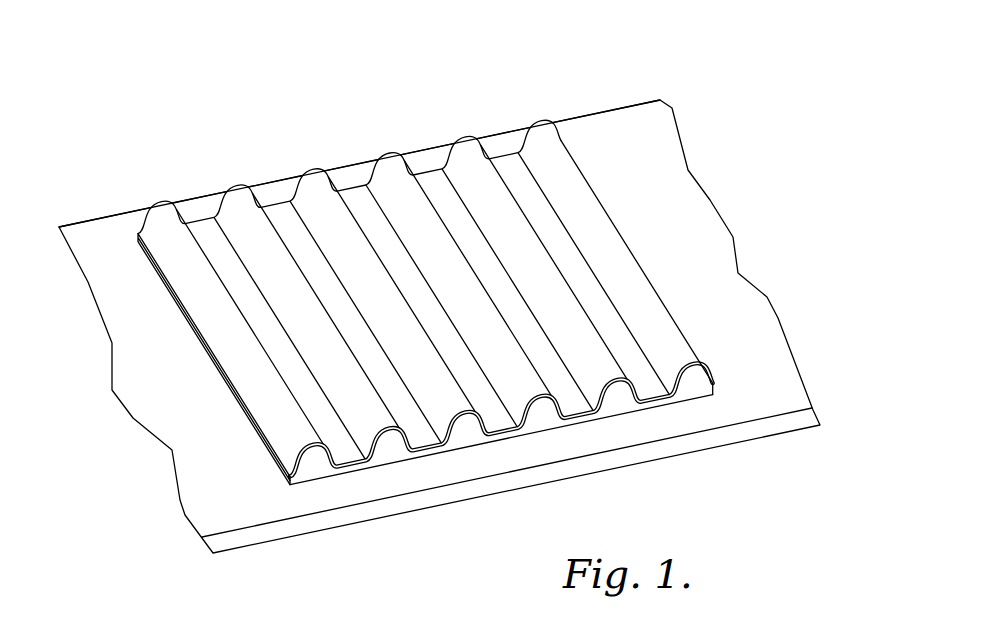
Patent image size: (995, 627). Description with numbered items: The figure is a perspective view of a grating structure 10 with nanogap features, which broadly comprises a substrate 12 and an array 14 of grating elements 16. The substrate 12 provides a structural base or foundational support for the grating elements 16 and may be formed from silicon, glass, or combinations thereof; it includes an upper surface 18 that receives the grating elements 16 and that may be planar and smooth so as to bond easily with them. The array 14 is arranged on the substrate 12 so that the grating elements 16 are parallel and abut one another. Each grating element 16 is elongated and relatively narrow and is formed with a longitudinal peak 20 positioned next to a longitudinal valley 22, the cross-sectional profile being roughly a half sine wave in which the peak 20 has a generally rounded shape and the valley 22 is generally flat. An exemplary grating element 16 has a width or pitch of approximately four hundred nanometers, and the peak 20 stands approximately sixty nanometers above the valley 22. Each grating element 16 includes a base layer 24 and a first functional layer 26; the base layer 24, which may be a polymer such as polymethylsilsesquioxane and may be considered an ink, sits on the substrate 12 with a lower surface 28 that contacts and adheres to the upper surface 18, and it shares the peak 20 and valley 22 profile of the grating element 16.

The grating structure 10 is at (267, 106).
The substrate 12 is at (703, 100).
The array 14 is at (152, 153).
The grating element 16 is at (498, 127).
The upper surface 18 is at (598, 130).
The longitudinal peak 20 is at (700, 395).
The longitudinal valley 22 is at (660, 418).
The base layer 24 is at (315, 458).
The first functional layer 26 is at (295, 439).
The lower surface 28 is at (217, 377).